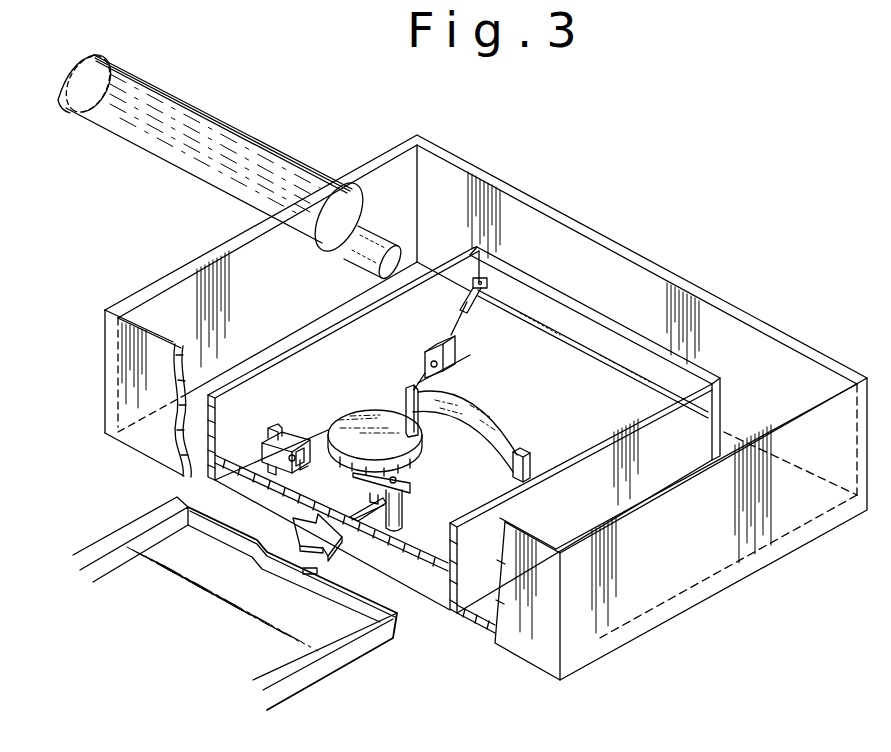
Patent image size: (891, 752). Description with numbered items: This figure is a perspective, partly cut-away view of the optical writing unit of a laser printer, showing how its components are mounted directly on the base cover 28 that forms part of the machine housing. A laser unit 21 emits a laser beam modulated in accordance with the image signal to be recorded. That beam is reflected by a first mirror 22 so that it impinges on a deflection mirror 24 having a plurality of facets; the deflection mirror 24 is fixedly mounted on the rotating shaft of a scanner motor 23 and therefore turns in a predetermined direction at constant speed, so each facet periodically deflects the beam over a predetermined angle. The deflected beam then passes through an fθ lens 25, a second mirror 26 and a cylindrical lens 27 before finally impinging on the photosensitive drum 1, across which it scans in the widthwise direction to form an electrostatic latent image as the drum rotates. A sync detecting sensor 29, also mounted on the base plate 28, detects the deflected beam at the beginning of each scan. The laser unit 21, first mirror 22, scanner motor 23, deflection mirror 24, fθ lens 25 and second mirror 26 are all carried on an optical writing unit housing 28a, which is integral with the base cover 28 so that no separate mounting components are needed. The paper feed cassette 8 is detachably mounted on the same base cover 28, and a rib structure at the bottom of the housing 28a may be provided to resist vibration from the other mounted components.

The photosensitive drum 1 is at (253, 137).
The paper feed cassette 8 is at (345, 658).
The laser unit 21 is at (297, 425).
The first mirror 22 is at (361, 522).
The scanner motor 23 is at (375, 422).
The deflection mirror 24 is at (335, 497).
The fθ lens 25 is at (487, 418).
The second mirror 26 is at (522, 316).
The cylindrical lens 27 is at (378, 240).
The base cover 28 is at (722, 564).
The optical writing unit housing 28a is at (432, 575).
The sync detecting sensor 29 is at (430, 343).